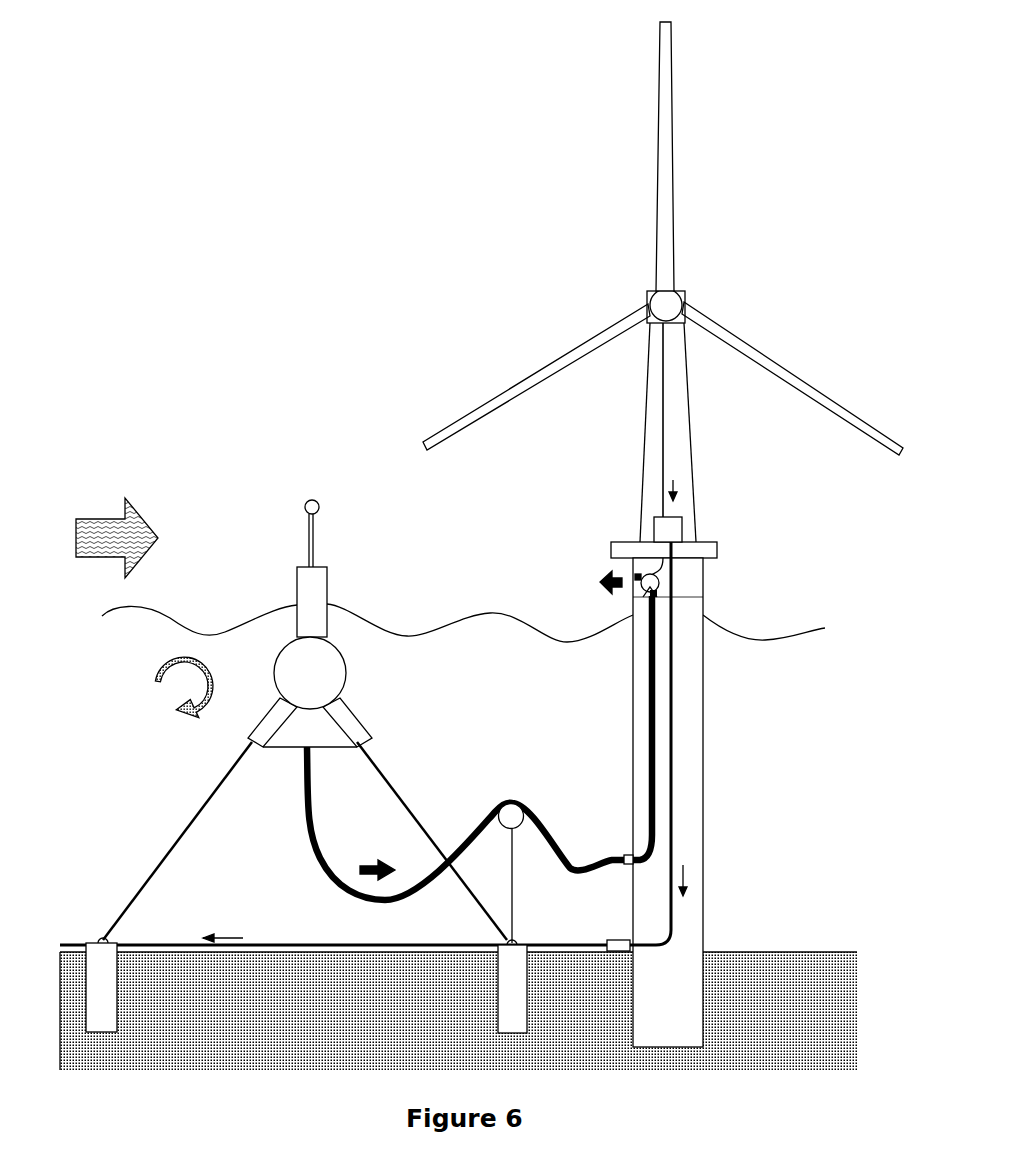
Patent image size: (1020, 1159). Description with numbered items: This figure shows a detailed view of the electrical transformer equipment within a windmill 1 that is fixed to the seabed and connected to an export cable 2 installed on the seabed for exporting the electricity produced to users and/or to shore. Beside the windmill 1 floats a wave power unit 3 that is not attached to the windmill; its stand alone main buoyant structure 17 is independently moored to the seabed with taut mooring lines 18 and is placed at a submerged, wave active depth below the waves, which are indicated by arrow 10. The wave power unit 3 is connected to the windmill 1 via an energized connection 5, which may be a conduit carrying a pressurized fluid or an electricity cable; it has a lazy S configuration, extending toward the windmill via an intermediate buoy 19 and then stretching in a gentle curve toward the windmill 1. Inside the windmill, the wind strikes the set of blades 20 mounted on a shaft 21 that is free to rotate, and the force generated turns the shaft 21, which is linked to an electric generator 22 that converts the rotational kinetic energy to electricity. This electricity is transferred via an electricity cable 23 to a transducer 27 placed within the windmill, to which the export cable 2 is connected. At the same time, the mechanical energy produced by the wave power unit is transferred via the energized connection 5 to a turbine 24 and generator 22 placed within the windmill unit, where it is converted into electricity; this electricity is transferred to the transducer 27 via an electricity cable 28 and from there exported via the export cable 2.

The windmill 1 is at (663, 459).
The export cable 2 is at (302, 946).
The wave power unit 3 is at (303, 720).
The energized connection 5 is at (318, 825).
The wave direction 10 is at (117, 532).
The main buoyant structure 17 is at (335, 671).
The taut mooring lines 18 is at (368, 745).
The intermediate buoy 19 is at (511, 815).
The set of blades 20 is at (663, 172).
The shaft 21 is at (672, 302).
The electric generator 22 is at (666, 456).
The electricity cable 23 is at (665, 396).
The turbine 24 is at (645, 590).
The transducer 27 is at (672, 524).
The electricity cable 28 is at (672, 561).